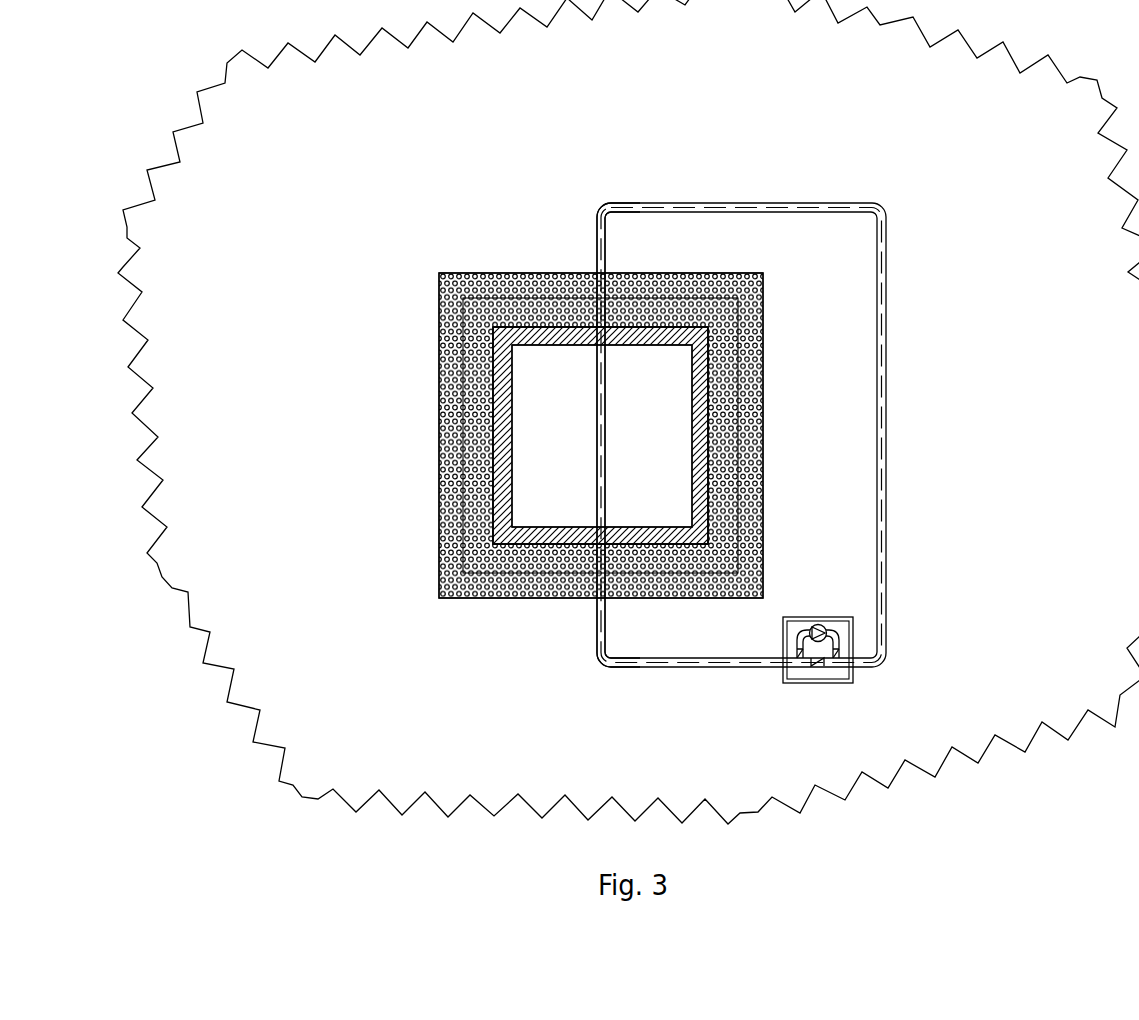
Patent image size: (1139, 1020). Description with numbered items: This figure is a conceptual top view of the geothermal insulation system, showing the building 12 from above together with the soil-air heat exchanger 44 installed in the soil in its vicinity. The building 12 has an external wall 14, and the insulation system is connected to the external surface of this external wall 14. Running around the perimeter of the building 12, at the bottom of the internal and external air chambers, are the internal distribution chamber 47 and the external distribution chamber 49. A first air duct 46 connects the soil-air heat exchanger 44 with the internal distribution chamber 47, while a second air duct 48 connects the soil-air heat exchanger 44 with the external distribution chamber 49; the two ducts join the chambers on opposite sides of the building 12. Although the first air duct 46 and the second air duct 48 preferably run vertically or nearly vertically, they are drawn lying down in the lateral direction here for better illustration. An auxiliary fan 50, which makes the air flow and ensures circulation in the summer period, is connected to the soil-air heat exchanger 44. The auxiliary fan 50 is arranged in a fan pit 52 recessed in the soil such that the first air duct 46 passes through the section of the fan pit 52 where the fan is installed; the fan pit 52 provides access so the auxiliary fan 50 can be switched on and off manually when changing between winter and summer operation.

The building 12 is at (629, 409).
The external wall 14 is at (512, 468).
The soil-air heat exchanger 44 is at (887, 356).
The first air duct 46 is at (597, 638).
The internal distribution chamber 47 is at (470, 554).
The second air duct 48 is at (597, 233).
The external distribution chamber 49 is at (763, 299).
The auxiliary fan 50 is at (818, 624).
The fan pit 52 is at (795, 685).